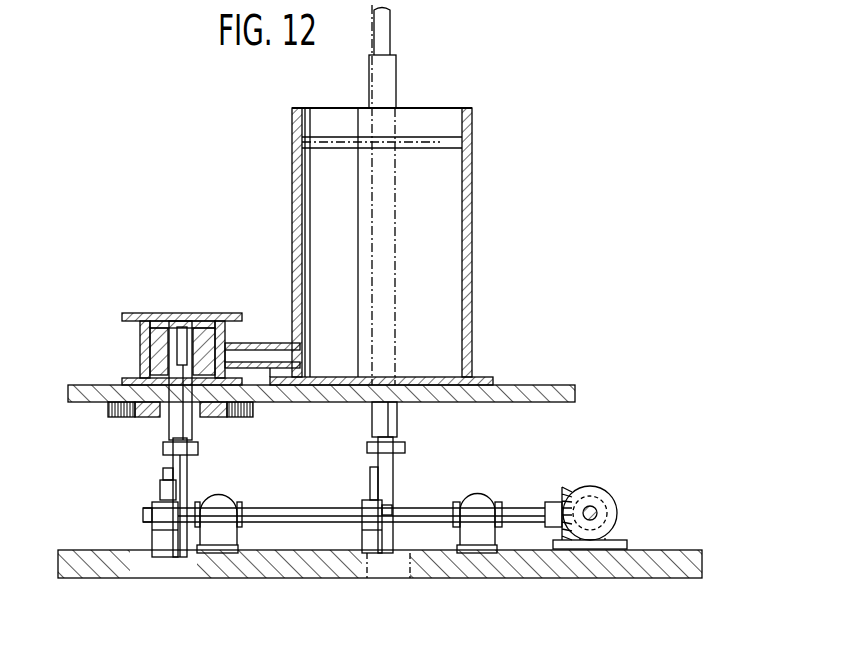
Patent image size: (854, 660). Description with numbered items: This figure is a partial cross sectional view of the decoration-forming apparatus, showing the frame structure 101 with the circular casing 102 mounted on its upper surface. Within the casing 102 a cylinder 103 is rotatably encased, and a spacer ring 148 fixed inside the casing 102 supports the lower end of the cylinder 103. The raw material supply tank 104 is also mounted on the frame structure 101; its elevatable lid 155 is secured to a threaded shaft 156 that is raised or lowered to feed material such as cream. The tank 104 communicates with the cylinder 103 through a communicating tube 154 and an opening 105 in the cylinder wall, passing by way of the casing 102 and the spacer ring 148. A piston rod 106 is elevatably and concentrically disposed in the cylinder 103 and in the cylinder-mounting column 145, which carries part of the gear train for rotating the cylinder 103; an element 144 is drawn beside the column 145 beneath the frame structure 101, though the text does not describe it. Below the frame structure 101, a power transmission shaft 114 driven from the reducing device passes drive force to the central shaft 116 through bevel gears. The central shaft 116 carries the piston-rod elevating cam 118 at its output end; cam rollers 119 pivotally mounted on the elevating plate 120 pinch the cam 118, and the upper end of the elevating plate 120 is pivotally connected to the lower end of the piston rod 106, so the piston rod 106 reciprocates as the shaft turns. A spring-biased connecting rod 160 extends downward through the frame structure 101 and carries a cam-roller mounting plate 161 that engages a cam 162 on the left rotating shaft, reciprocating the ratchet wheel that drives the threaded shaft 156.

The frame structure 101 is at (321, 366).
The circular casing 102 is at (140, 318).
The cylinder 103 is at (134, 351).
The raw material supply tank 104 is at (402, 246).
The opening 105 is at (190, 355).
The piston rod 106 is at (216, 392).
The power transmission shaft 114 is at (593, 495).
The central shaft 116 is at (325, 513).
The piston-rod elevating cam 118 is at (125, 493).
The cam rollers 119 is at (139, 463).
The elevating plate 120 is at (220, 497).
The nut 144 is at (263, 421).
The cylinder-mounting column 145 is at (116, 427).
The spacer ring 148 is at (182, 291).
The communicating tube 154 is at (262, 322).
The elevatable lid 155 is at (399, 107).
The threaded shaft 156 is at (414, 195).
The connecting rod 160 is at (421, 420).
The cam-roller mounting plate 161 is at (412, 495).
The cam 162 is at (341, 476).